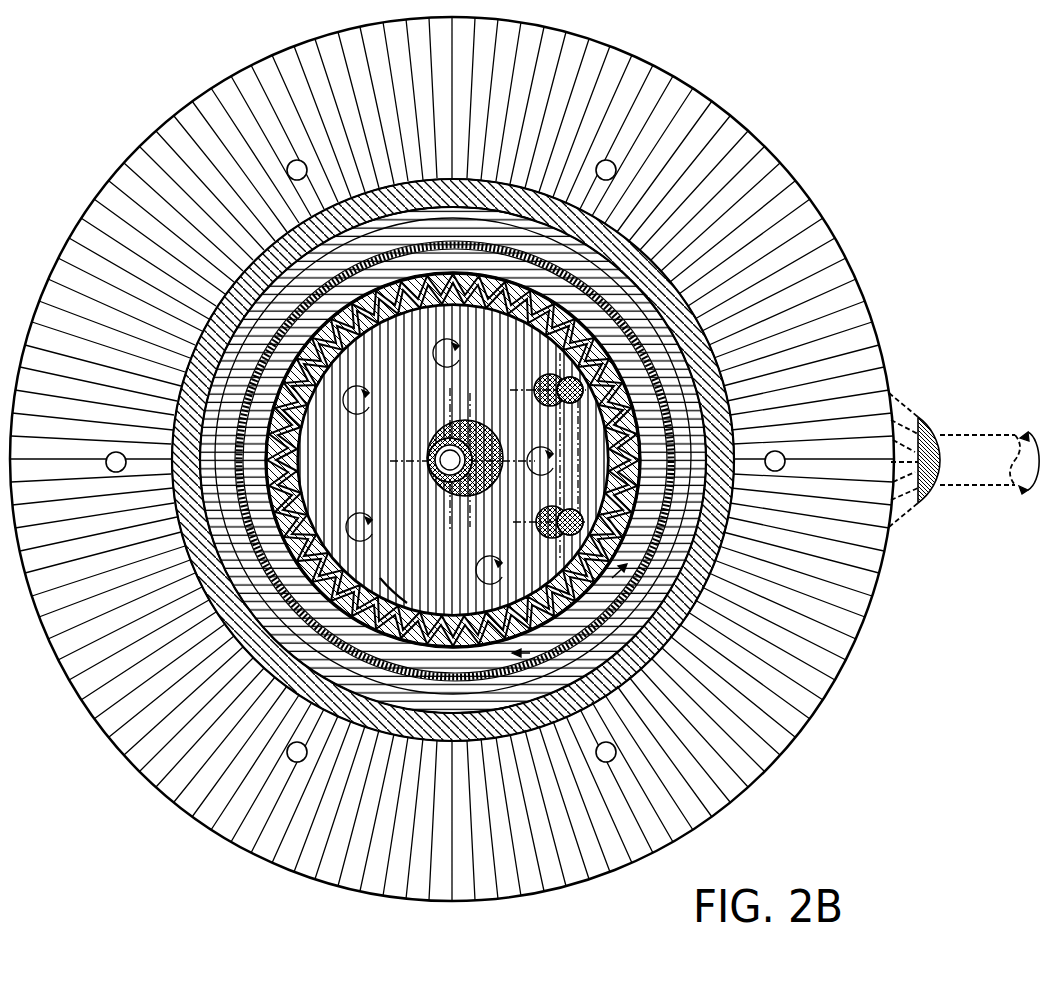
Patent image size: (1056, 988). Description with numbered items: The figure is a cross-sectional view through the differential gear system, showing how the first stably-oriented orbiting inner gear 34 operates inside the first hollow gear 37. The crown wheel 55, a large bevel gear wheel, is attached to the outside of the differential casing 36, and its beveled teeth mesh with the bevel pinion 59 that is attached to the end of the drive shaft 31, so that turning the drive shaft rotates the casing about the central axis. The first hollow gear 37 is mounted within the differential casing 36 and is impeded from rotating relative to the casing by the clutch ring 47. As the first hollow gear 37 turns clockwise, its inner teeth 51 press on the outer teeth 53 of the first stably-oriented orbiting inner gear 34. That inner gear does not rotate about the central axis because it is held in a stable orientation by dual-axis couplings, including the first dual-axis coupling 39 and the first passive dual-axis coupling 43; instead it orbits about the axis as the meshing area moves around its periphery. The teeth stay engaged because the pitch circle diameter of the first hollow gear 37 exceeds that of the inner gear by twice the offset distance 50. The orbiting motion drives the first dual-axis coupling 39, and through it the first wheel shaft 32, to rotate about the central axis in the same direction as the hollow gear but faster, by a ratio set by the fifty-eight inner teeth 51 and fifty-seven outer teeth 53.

The drive shaft 31 is at (970, 433).
The first wheel shaft 32 is at (427, 466).
The first stably-oriented orbiting inner gear 34 is at (434, 592).
The differential casing 36 is at (441, 737).
The first hollow gear 37 is at (439, 672).
The first dual-axis coupling 39 is at (485, 431).
The first passive dual-axis coupling 43 is at (541, 369).
The clutch ring 47 is at (444, 711).
The offset distance 50 is at (530, 478).
The inner teeth 51 is at (398, 646).
The outer teeth 53 is at (407, 603).
The crown wheel 55 is at (864, 302).
The bevel pinion 59 is at (899, 393).